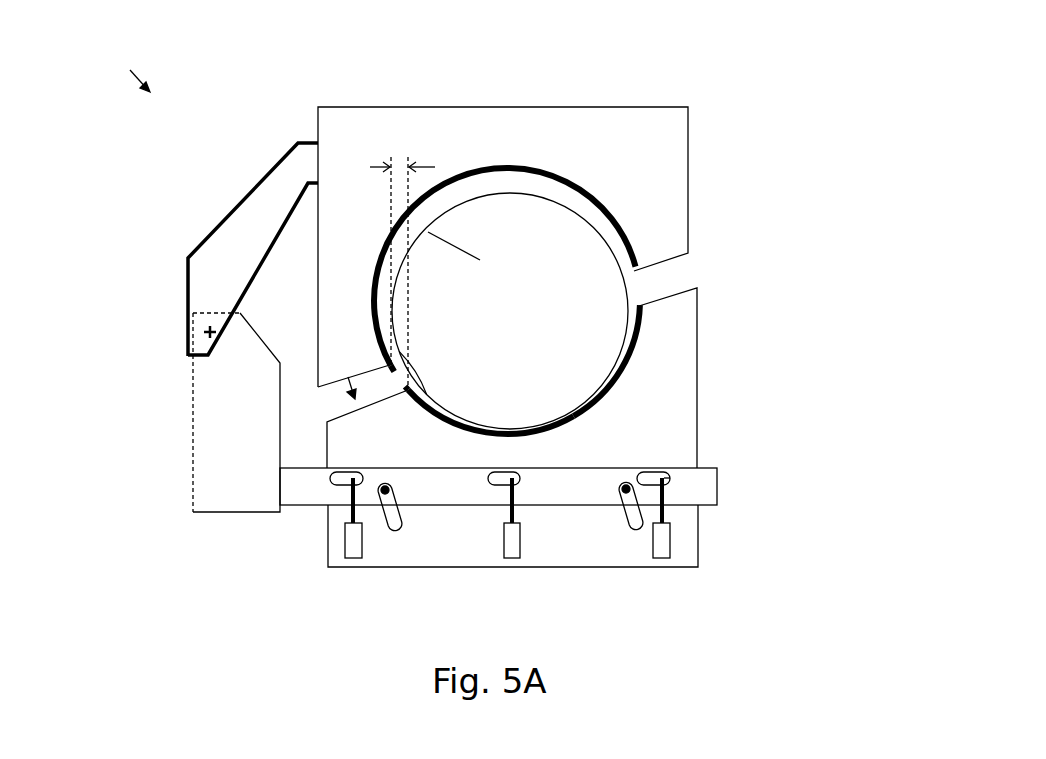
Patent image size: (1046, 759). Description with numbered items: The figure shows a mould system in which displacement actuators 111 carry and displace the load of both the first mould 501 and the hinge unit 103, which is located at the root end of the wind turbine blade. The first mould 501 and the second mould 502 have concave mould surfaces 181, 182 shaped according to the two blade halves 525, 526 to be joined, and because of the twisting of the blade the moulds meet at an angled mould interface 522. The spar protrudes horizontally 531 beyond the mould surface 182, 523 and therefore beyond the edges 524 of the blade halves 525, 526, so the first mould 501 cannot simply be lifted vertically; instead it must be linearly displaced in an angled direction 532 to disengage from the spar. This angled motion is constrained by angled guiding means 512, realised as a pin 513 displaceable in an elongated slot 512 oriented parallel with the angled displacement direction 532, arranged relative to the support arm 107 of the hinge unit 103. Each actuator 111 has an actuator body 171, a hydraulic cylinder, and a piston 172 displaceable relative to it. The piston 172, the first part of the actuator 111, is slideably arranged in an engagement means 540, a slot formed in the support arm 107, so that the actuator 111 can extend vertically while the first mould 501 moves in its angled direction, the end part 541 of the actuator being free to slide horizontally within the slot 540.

The hinge unit 103 is at (179, 242).
The first mould 501 is at (690, 127).
The second mould 502 is at (700, 348).
The mould surface 181 is at (567, 177).
The mould surface 182 is at (631, 357).
The mould surface 523 is at (615, 390).
The mould interface 522 is at (668, 292).
The horizontal protrusion 531 is at (395, 168).
The blade half 526 is at (373, 318).
The edge of blade half 524 is at (393, 366).
The blade half 525 is at (418, 402).
The angled displacement direction 532 is at (344, 396).
The support arm 107 is at (710, 465).
The displacement actuator 111 is at (662, 542).
The engagement means 540 is at (342, 477).
The slot end 541 is at (667, 480).
The piston 172 is at (663, 513).
The actuator body 171 is at (660, 528).
The pin 513 is at (390, 487).
The angled guiding means 512 is at (403, 513).